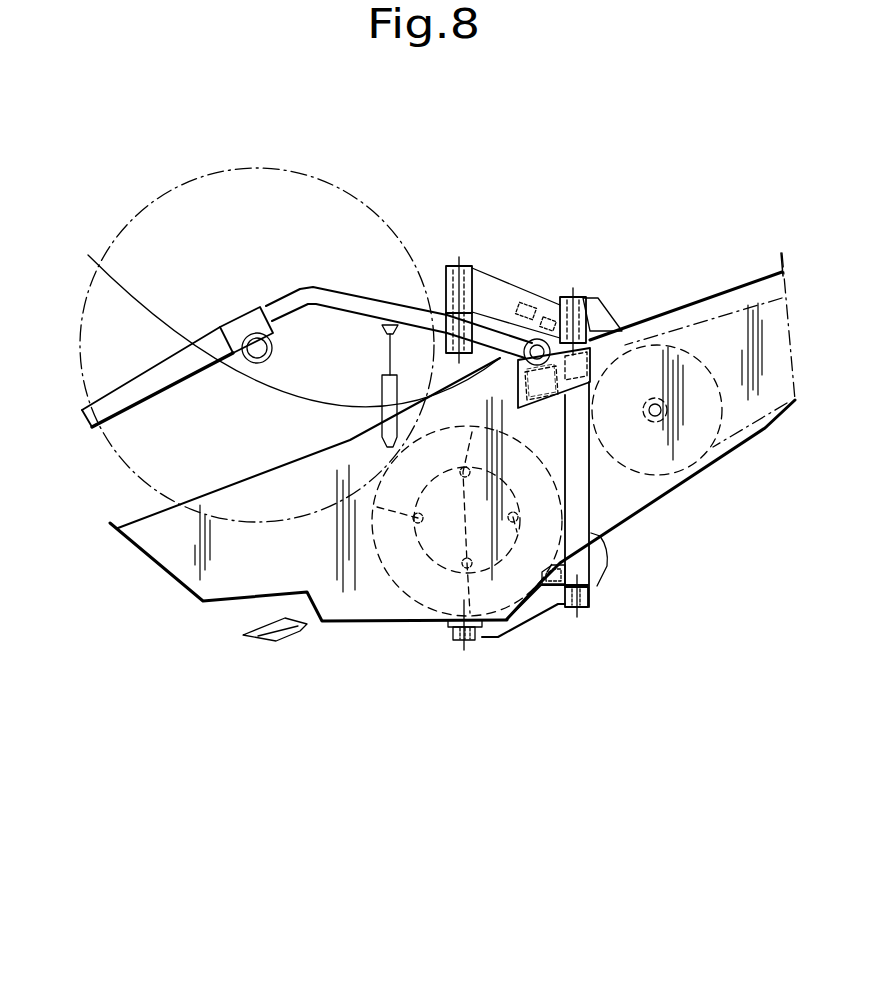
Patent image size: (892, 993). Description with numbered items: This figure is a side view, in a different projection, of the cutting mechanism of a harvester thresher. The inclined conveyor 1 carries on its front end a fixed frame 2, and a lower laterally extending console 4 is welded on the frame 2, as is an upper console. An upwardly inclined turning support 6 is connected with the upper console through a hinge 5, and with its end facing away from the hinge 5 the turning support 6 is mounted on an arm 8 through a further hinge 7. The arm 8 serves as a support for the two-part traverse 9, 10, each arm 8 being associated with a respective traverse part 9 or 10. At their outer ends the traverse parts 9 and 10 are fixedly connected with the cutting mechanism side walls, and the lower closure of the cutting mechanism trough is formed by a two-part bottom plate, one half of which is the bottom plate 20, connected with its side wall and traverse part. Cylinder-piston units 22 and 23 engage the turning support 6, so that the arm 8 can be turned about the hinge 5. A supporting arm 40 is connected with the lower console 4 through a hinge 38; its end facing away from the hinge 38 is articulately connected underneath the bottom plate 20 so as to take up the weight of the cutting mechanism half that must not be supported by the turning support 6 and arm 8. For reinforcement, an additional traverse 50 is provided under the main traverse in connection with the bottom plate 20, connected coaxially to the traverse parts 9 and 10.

The inclined conveyor 1 is at (718, 296).
The fixed frame 2 is at (592, 357).
The lower console 4 is at (580, 567).
The hinge 5 is at (582, 298).
The turning support 6 is at (490, 290).
The hinge 7 is at (455, 267).
The arm 8 is at (307, 345).
The traverse part 9 is at (627, 447).
The traverse part 10 is at (538, 395).
The bottom plate 20 is at (407, 623).
The cylinder-piston unit 22 is at (562, 252).
The cylinder-piston unit 23 is at (547, 316).
The hinge 38 is at (590, 604).
The supporting arm 40 is at (508, 627).
The additional traverse 50 is at (555, 586).